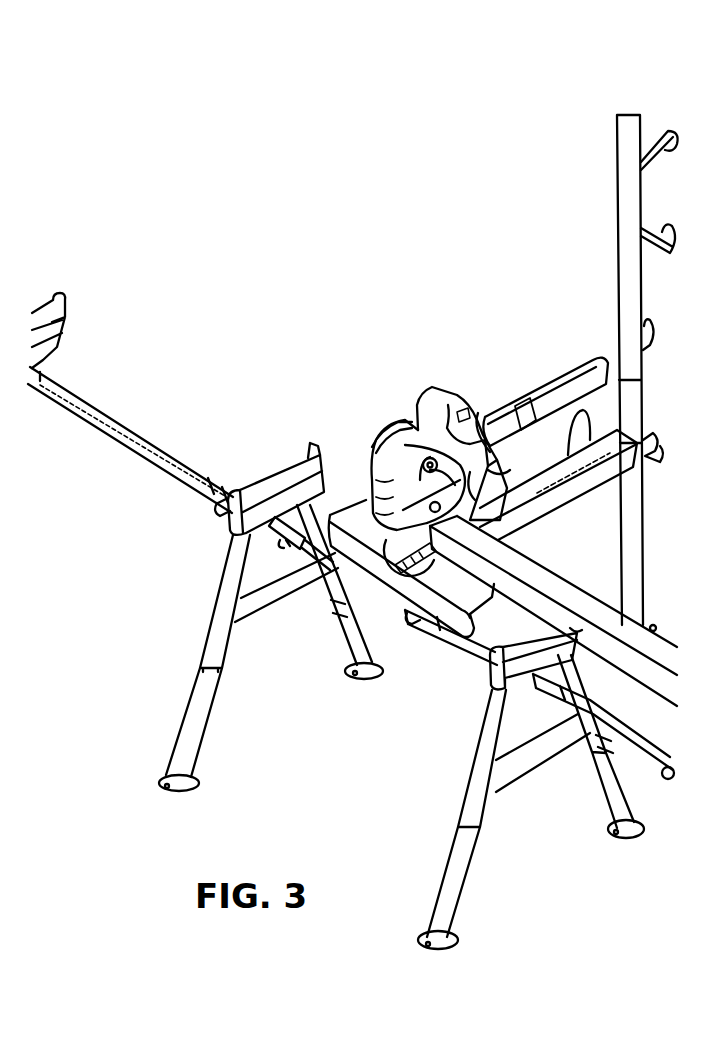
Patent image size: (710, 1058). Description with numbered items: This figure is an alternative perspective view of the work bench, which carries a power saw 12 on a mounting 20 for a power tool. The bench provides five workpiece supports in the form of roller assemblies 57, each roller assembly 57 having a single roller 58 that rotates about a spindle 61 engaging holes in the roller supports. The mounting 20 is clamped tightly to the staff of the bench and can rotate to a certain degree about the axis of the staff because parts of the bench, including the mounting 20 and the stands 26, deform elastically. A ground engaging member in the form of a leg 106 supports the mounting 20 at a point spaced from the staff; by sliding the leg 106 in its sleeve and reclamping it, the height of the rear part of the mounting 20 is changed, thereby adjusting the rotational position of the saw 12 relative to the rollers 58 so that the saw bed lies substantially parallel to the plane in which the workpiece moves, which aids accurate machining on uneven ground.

The power saw 12 is at (397, 395).
The mounting 20 is at (564, 477).
The stands 26 is at (333, 650).
The roller assemblies 57 is at (276, 458).
The roller 58 is at (307, 452).
The spindle 61 is at (240, 507).
The leg 106 is at (626, 541).